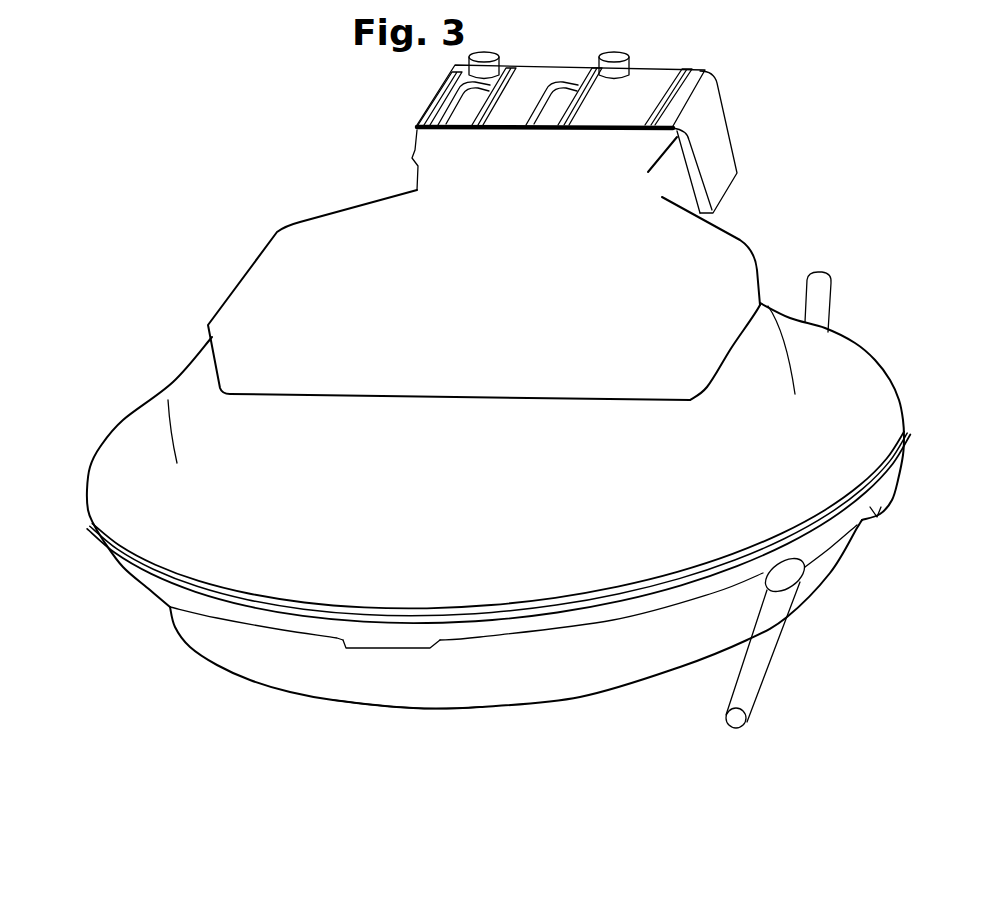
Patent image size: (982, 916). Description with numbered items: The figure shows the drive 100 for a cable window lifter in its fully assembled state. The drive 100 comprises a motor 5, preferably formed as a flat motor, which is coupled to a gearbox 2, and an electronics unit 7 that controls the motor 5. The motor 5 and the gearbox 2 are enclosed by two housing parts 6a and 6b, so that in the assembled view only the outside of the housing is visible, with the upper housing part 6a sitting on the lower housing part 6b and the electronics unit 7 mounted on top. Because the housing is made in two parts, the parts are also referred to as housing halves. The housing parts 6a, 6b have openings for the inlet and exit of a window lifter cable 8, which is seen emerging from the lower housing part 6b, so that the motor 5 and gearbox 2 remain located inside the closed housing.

The drive 100 is at (162, 172).
The gearbox 2 is at (317, 703).
The motor 5 is at (112, 403).
The housing part 6a is at (197, 377).
The housing part 6b is at (662, 647).
The electronics unit 7 is at (353, 223).
The window lifter cable 8 is at (747, 678).